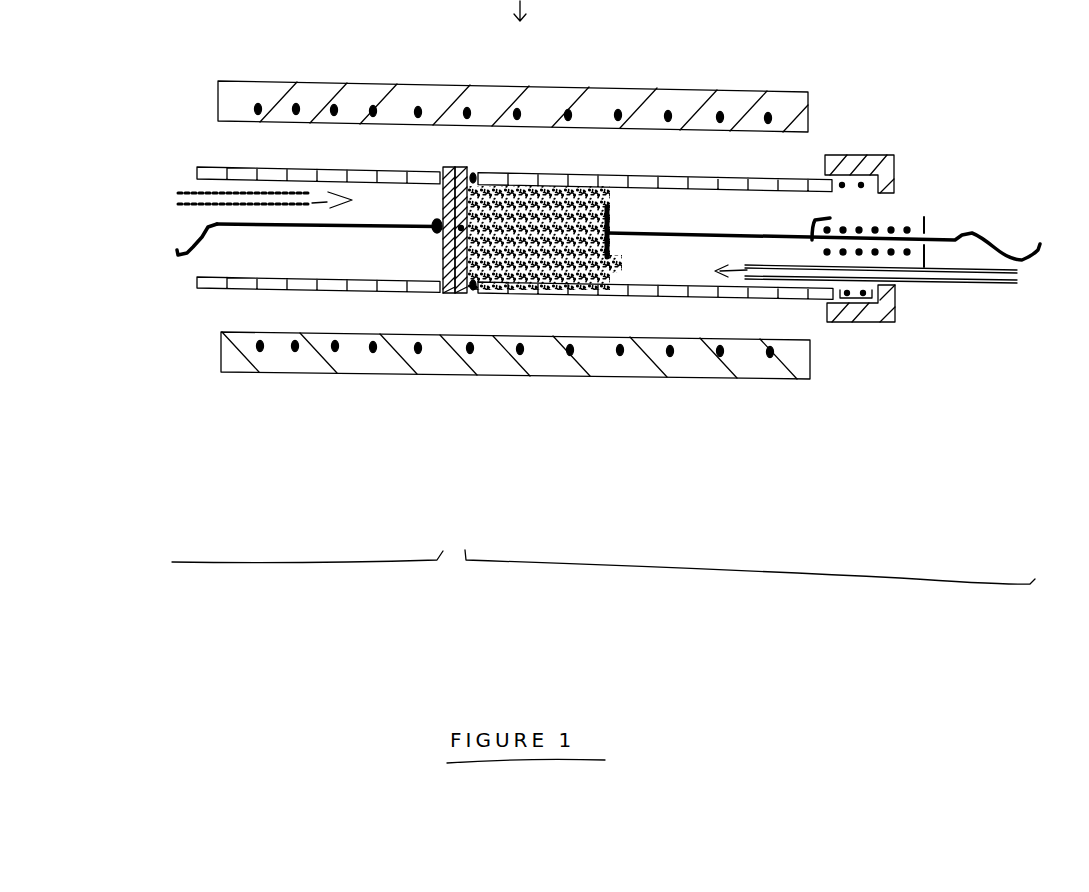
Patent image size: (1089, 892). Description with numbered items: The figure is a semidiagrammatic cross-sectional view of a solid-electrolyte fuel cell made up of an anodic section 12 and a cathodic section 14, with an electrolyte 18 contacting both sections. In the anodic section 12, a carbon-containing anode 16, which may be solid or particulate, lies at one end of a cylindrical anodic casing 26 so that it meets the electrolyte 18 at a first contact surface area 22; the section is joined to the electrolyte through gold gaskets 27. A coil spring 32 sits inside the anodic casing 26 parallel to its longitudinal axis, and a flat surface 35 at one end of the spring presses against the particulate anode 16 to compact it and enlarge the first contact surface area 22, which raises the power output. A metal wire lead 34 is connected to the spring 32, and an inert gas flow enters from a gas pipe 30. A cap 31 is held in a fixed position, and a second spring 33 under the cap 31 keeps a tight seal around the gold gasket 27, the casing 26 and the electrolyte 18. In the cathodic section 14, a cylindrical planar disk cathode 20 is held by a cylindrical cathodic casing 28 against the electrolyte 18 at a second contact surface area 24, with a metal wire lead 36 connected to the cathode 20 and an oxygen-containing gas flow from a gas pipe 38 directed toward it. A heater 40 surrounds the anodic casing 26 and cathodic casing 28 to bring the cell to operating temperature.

The anodic section 12 is at (634, 588).
The cathodic section 14 is at (299, 588).
The carbon-containing anode 16 is at (582, 298).
The electrolyte 18 is at (461, 298).
The cathode 20 is at (450, 298).
The first contact surface area 22 is at (463, 192).
The second contact surface area 24 is at (449, 200).
The anodic casing 26 is at (697, 298).
The gold gaskets 27 is at (473, 298).
The cathodic casing 28 is at (255, 292).
The gas pipe 30 is at (948, 286).
The cap 31 is at (893, 333).
The spring 32 is at (866, 222).
The spring 33 is at (852, 303).
The metal wire lead 34 is at (1043, 258).
The flat surface 35 is at (604, 208).
The metal wire lead 36 is at (183, 268).
The gas pipe 38 is at (188, 172).
The heater 40 is at (838, 127).